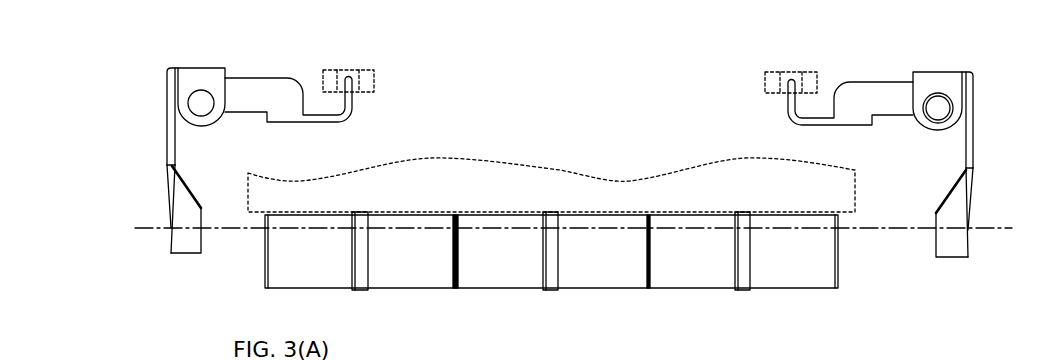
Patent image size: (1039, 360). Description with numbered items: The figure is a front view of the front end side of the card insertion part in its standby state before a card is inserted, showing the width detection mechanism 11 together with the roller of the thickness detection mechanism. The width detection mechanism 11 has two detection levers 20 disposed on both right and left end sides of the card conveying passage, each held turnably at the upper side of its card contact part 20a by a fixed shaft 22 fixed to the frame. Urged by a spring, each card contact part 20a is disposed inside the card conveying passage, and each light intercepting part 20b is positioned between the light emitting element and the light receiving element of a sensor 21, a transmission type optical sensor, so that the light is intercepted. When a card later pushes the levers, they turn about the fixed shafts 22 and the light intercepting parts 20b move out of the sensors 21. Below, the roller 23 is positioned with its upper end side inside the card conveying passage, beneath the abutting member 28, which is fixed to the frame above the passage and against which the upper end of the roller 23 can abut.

The width detection mechanism 11 is at (986, 66).
The detection lever 20 is at (167, 145).
The card contact part 20a is at (201, 240).
The light intercepting part 20b is at (355, 100).
The sensor 21 is at (376, 82).
The fixed shaft 22 is at (188, 102).
The roller 23 is at (495, 288).
The abutting member 28 is at (247, 188).